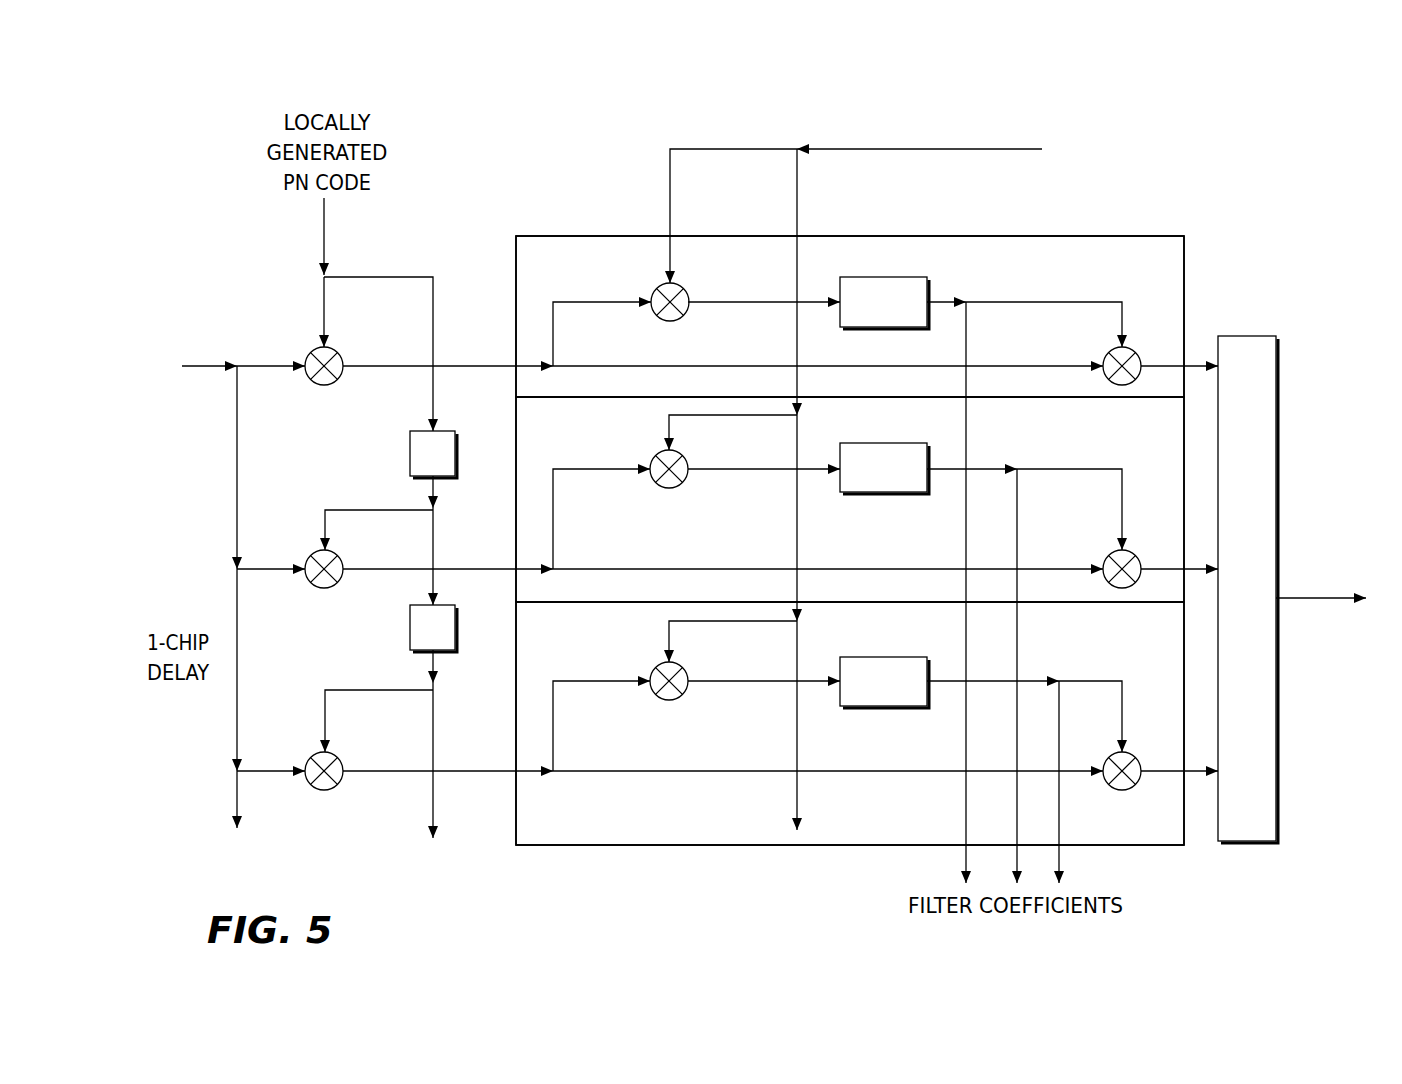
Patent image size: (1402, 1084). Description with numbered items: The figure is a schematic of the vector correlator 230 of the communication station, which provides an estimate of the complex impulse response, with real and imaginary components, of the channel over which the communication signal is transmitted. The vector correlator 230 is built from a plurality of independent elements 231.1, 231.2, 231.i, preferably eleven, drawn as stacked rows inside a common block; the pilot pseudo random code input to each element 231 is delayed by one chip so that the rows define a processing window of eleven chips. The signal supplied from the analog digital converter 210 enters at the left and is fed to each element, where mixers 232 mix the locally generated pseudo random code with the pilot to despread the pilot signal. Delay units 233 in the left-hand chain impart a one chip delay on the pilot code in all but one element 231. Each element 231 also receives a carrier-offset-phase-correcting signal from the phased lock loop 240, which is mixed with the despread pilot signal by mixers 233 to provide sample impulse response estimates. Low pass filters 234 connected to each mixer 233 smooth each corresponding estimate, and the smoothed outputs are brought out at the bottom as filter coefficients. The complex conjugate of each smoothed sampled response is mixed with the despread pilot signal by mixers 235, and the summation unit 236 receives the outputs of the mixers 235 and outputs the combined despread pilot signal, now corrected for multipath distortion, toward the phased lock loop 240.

The analog digital converter 210 is at (142, 376).
The vector correlator 230 is at (841, 466).
The element 231 is at (955, 235).
The element 231.1 is at (596, 281).
The element 231.2 is at (596, 450).
The element 231.i is at (596, 655).
The mixer 232 is at (343, 356).
The delay unit / mixer 233 is at (688, 291).
The low pass filter 234 is at (920, 277).
The mixer 235 is at (1102, 350).
The summation unit 236 is at (1242, 336).
The phased lock loop 240 is at (1096, 447).